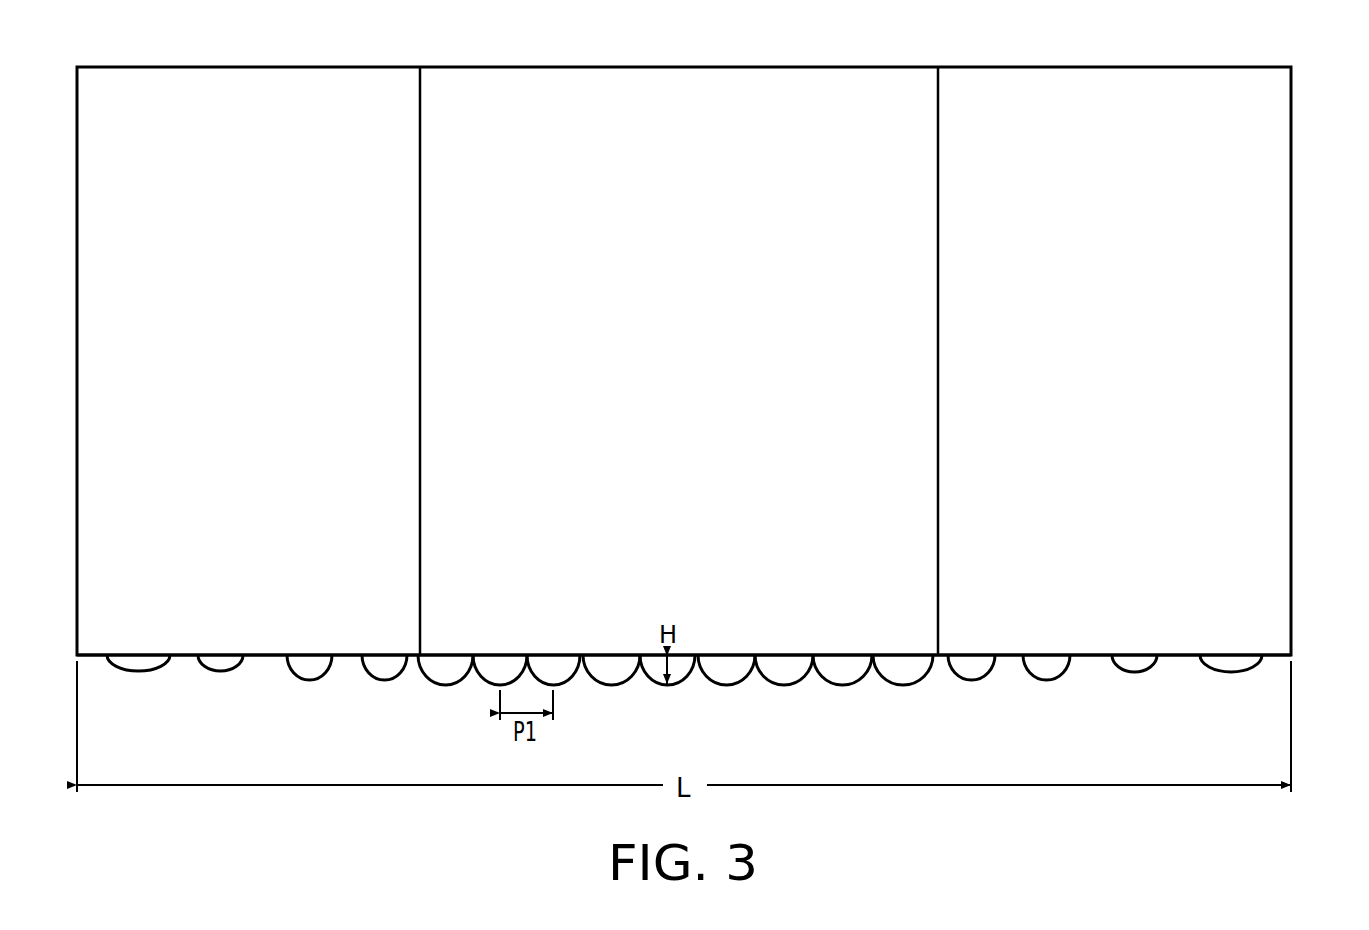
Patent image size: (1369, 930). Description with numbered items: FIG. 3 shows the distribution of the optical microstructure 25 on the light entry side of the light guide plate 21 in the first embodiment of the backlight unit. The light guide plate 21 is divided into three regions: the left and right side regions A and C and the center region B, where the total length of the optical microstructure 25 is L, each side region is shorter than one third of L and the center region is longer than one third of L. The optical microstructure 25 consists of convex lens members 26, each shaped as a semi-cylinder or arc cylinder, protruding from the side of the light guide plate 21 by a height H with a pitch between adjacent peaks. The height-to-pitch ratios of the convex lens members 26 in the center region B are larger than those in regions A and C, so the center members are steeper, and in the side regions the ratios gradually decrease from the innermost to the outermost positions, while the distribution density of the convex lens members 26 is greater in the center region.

The light guide plate 21 is at (1276, 363).
The optical microstructure 25 is at (1092, 680).
The convex lens member 26 is at (1228, 664).